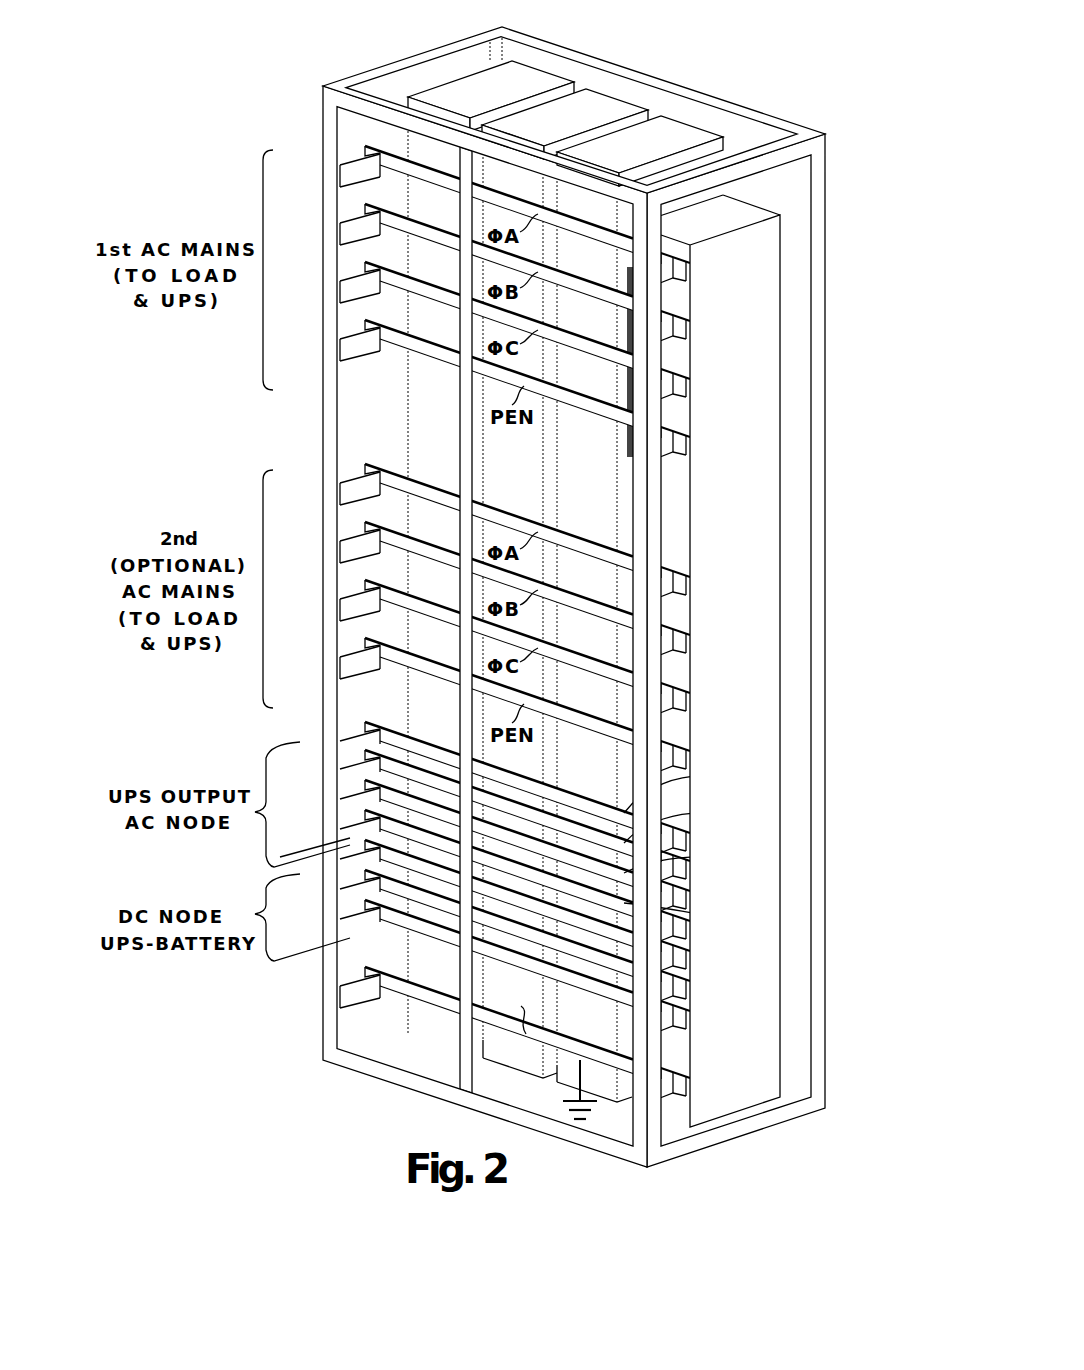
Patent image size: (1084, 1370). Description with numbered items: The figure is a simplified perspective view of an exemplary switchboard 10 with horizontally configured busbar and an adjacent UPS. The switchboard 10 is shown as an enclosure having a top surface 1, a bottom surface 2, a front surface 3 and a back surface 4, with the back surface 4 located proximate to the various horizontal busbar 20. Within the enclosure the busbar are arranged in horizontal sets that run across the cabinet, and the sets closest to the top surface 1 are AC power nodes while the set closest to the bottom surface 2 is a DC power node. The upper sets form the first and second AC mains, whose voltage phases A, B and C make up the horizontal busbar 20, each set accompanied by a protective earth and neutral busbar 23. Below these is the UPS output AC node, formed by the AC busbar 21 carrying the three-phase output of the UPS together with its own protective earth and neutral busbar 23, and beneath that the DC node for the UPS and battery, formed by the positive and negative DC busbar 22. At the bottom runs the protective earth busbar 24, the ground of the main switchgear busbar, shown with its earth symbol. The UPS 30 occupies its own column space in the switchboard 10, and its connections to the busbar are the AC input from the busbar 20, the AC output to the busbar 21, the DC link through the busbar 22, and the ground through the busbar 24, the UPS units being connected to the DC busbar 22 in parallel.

The top surface 1 is at (622, 100).
The bottom surface 2 is at (672, 1122).
The front surface 3 is at (792, 360).
The back surface 4 is at (388, 425).
The switchboard 10 is at (231, 80).
The horizontal busbar 20 is at (392, 173).
The AC busbar 21 is at (375, 749).
The DC busbar 22 is at (375, 868).
The PEN busbar 23 is at (392, 347).
The PE busbar 24 is at (385, 982).
The UPS 30 is at (752, 703).